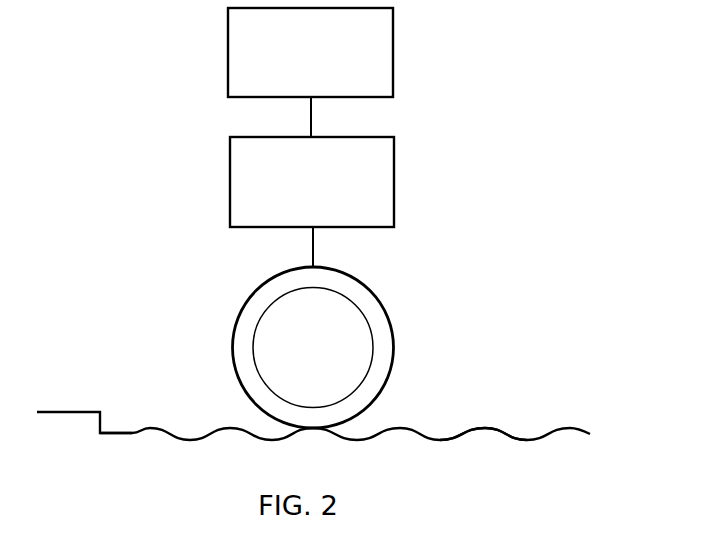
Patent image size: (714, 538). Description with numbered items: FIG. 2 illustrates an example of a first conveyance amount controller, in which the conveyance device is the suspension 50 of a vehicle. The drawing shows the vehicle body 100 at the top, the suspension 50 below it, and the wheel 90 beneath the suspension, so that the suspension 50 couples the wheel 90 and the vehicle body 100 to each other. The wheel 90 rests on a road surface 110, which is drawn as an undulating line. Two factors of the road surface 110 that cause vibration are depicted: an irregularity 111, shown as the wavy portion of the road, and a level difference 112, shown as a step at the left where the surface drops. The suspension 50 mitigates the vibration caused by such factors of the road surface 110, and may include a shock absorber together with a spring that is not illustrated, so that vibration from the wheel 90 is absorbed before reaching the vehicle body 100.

The vehicle body 100 is at (393, 52).
The suspension 50 is at (394, 181).
The wheel 90 is at (395, 348).
The road surface 110 is at (570, 428).
The irregularity 111 is at (485, 428).
The level difference 112 is at (100, 418).